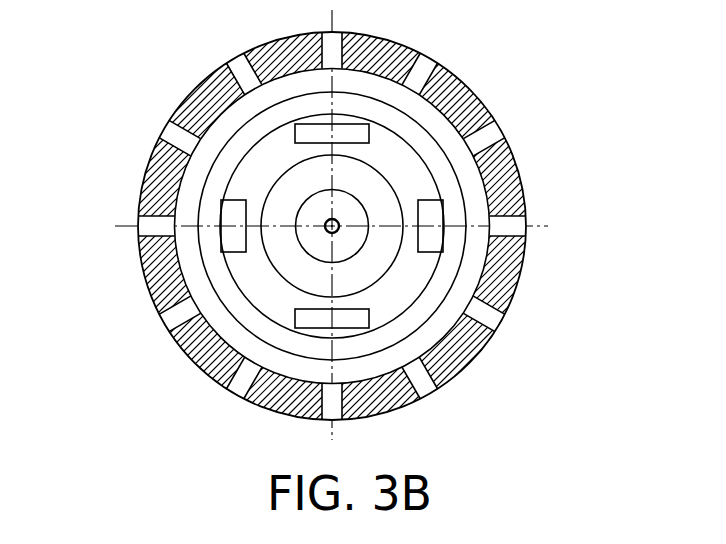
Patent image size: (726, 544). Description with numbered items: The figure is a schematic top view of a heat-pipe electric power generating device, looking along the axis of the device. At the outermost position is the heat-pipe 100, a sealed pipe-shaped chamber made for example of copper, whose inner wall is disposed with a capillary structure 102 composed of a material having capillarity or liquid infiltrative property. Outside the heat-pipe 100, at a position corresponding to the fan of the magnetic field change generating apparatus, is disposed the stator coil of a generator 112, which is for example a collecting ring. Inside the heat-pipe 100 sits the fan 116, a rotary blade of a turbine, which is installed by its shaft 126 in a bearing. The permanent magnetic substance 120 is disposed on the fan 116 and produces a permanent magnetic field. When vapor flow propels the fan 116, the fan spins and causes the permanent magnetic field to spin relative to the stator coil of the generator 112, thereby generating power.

The heat-pipe 100 is at (195, 271).
The capillary structure 102 is at (248, 311).
The stator coil of a generator 112 is at (500, 278).
The fan 116 is at (405, 170).
The permanent magnetic substance 120 is at (428, 217).
The shaft 126 is at (327, 221).